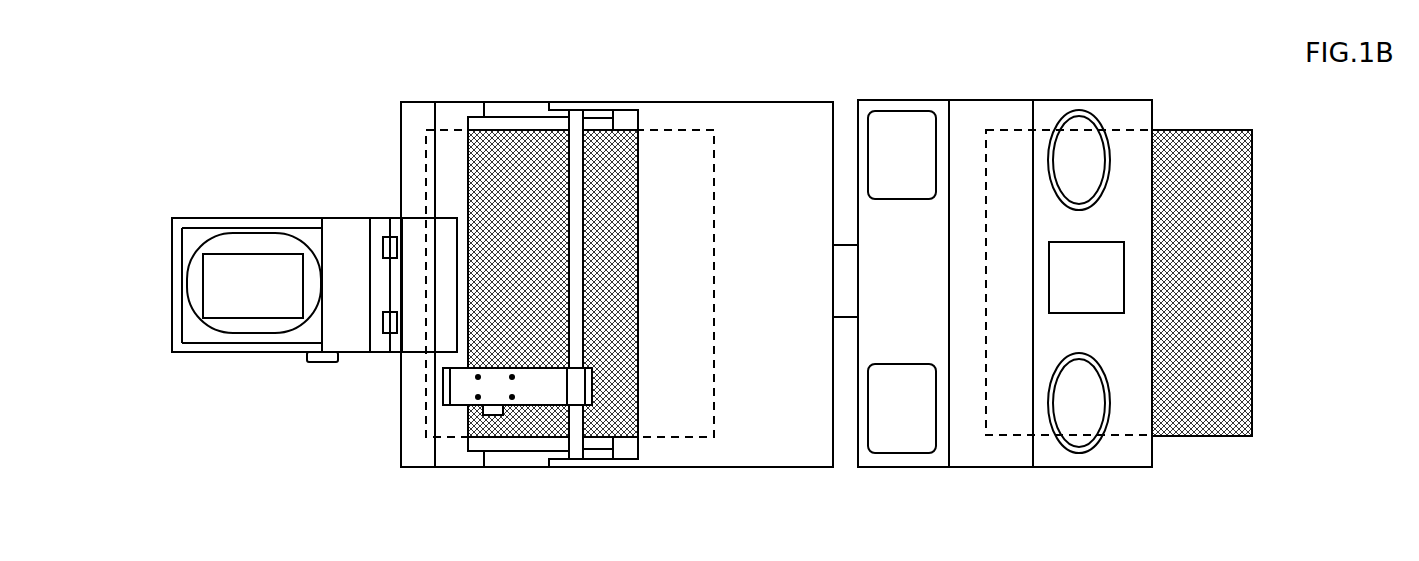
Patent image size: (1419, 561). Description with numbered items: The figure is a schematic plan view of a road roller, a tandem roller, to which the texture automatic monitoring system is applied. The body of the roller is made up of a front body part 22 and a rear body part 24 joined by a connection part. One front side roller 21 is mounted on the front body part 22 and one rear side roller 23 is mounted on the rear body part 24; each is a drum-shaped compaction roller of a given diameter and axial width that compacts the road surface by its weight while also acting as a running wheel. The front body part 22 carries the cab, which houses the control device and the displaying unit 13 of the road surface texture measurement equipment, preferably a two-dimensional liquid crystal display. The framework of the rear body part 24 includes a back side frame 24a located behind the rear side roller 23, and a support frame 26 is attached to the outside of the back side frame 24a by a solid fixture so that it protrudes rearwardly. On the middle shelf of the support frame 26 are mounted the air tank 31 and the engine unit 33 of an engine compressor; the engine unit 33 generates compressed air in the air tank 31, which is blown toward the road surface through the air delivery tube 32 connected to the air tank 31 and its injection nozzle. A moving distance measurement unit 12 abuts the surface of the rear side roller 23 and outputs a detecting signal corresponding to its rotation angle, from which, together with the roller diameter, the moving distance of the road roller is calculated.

The moving distance measurement unit 12 is at (497, 395).
The displaying unit 13 is at (1093, 295).
The front side roller 21 is at (1220, 167).
The front body part 22 is at (970, 107).
The rear side roller 23 is at (508, 138).
The rear body part 24 is at (682, 122).
The back side frame 24a is at (398, 127).
The support frame 26 is at (175, 252).
The air tank 31 is at (283, 242).
The air delivery tube 32 is at (322, 362).
The engine unit 33 is at (230, 270).